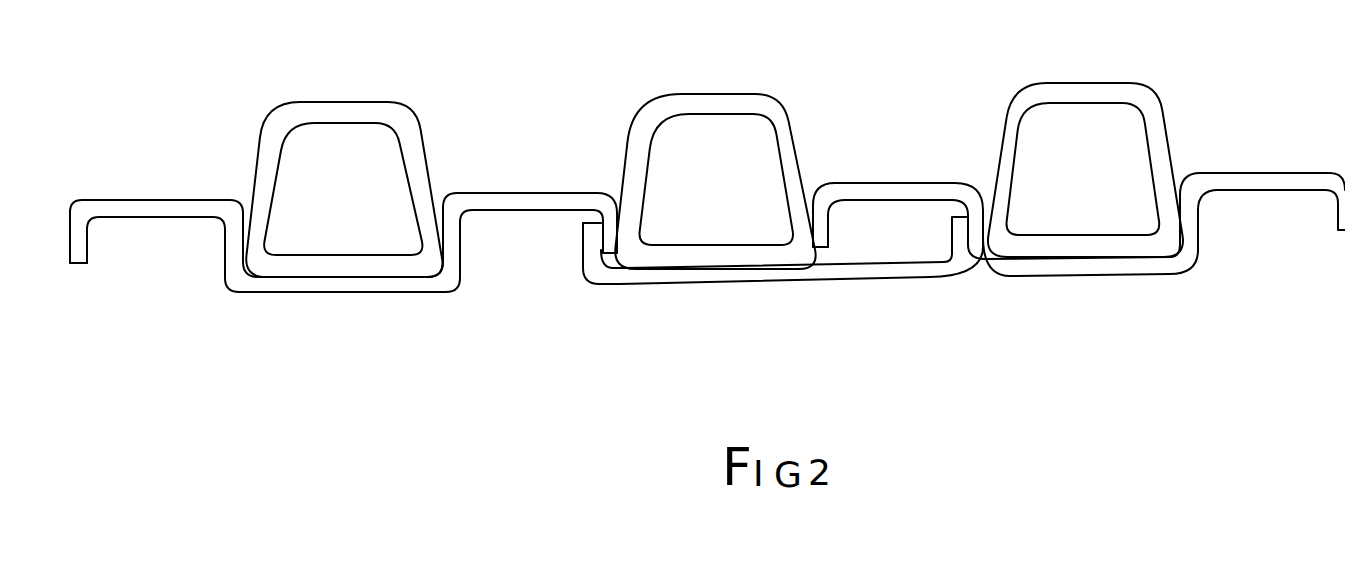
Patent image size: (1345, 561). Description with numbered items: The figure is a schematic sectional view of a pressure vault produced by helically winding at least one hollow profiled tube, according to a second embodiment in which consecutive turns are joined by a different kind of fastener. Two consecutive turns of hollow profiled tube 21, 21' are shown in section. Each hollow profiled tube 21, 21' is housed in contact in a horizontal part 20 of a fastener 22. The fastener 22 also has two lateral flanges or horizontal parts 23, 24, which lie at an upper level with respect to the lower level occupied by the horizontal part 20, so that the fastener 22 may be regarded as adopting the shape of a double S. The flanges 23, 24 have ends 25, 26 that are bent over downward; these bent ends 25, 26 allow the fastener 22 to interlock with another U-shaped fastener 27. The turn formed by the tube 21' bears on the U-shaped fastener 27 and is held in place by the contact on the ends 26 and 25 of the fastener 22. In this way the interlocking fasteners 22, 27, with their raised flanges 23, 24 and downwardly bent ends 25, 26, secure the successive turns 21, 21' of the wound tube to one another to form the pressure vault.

The horizontal part 20 is at (329, 283).
The hollow profiled tube 21 is at (344, 152).
The hollow profiled tube 21' is at (721, 145).
The fastener 22 is at (423, 309).
The lateral flange 23 is at (143, 208).
The lateral flange 24 is at (515, 200).
The bent end 25 is at (90, 243).
The bent end 26 is at (573, 225).
The U-shaped fastener 27 is at (742, 303).